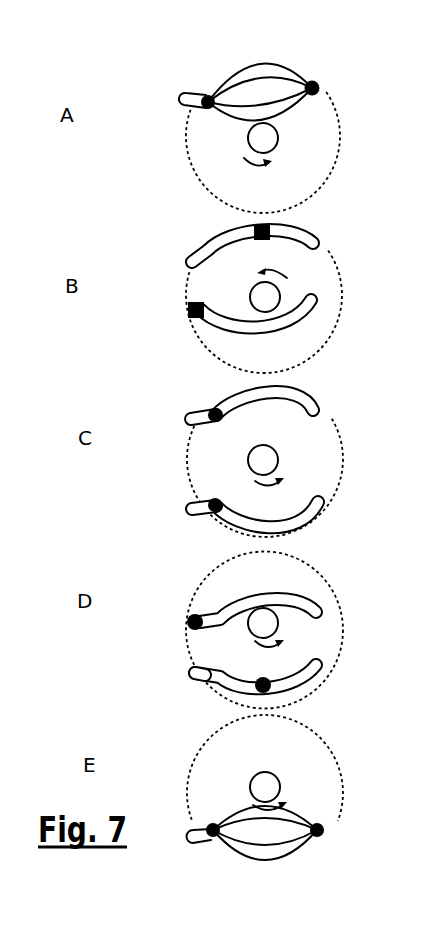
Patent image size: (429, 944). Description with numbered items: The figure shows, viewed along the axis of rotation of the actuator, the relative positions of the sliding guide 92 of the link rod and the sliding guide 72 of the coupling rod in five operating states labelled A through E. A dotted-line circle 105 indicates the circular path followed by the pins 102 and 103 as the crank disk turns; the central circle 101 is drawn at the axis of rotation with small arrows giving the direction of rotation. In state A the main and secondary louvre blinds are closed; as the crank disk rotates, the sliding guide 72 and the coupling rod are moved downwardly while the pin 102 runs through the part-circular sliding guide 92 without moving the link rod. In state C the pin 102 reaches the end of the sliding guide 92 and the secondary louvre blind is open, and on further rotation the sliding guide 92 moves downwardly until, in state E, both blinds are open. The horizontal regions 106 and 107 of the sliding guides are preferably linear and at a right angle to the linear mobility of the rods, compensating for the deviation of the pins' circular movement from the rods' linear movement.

The sliding guide 72 is at (284, 98).
The sliding guide 92 is at (280, 73).
The drive shaft 101 is at (268, 140).
The pin 102 is at (319, 87).
The pin 103 is at (199, 104).
The dotted-line circle 105 is at (200, 180).
The horizontal region 106 is at (187, 95).
The horizontal region 107 is at (200, 508).